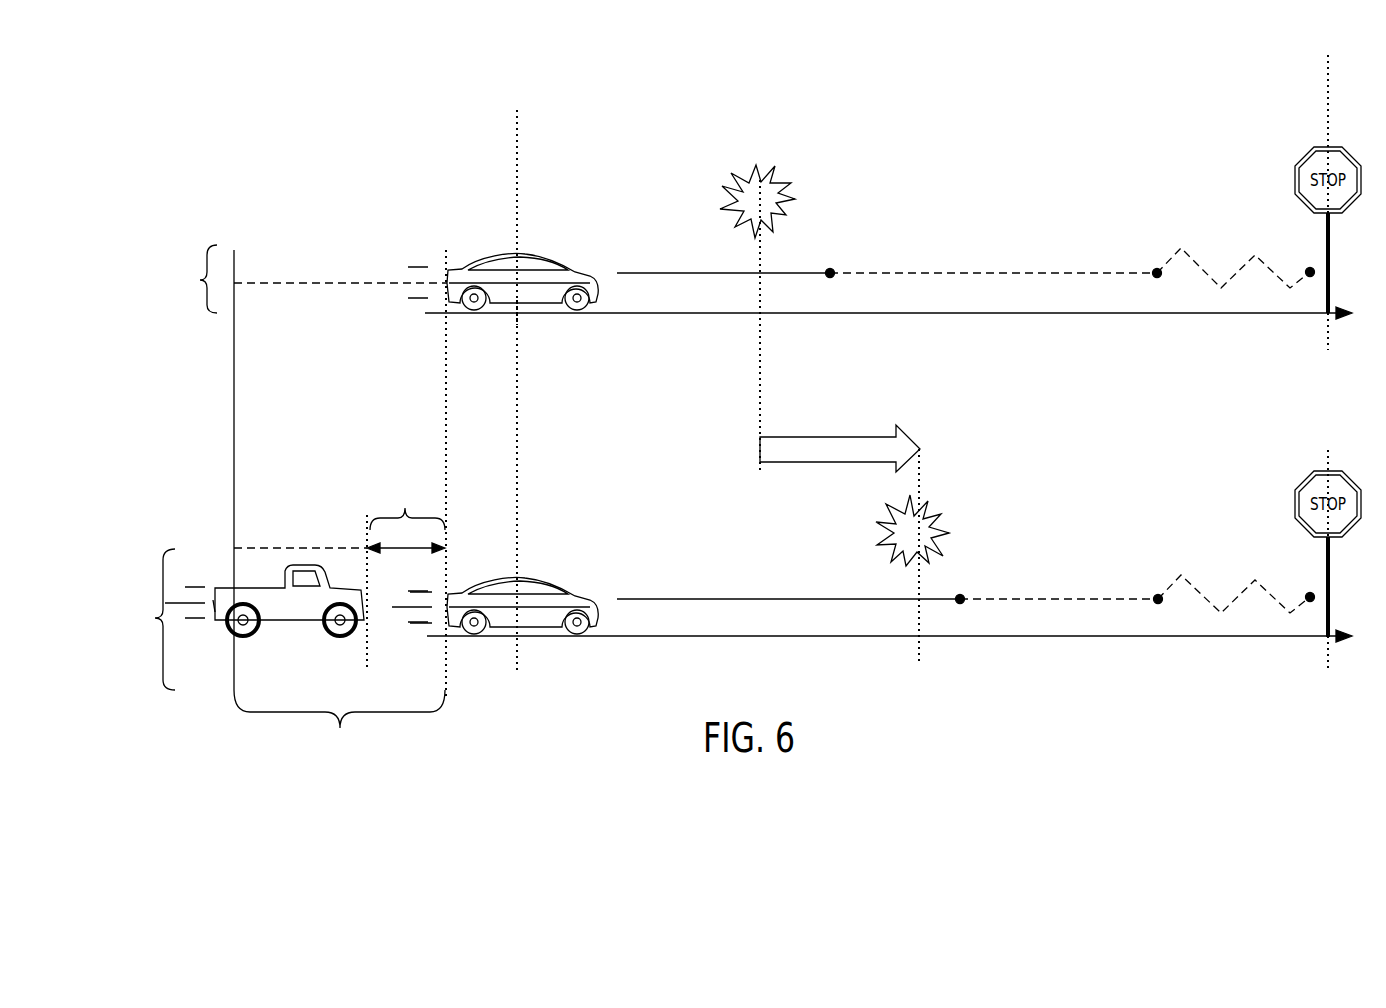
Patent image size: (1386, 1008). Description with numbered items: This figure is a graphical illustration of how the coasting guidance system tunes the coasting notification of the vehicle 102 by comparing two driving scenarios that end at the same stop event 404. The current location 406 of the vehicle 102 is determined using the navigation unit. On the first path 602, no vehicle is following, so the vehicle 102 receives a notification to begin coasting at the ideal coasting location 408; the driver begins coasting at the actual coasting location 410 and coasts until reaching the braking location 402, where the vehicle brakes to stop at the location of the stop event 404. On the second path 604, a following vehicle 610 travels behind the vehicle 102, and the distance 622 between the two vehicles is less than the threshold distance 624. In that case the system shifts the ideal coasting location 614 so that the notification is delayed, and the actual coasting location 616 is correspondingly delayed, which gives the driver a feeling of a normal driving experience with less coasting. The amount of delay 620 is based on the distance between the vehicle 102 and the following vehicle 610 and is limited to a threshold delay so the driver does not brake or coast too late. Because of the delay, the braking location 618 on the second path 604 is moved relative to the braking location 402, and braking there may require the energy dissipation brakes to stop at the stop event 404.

The vehicle 102 is at (566, 268).
The braking location 402 is at (1158, 270).
The stop event 404 is at (1334, 311).
The current location 406 is at (518, 313).
The ideal coasting location 408 is at (784, 180).
The actual coasting location 410 is at (830, 270).
The first path 602 is at (191, 279).
The second path 604 is at (142, 619).
The following vehicle 610 is at (302, 565).
The ideal coasting location 614 is at (940, 510).
The actual coasting location 616 is at (961, 596).
The braking location 618 is at (1159, 596).
The amount of delay 620 is at (844, 437).
The distance 622 is at (406, 516).
The threshold distance 624 is at (339, 726).